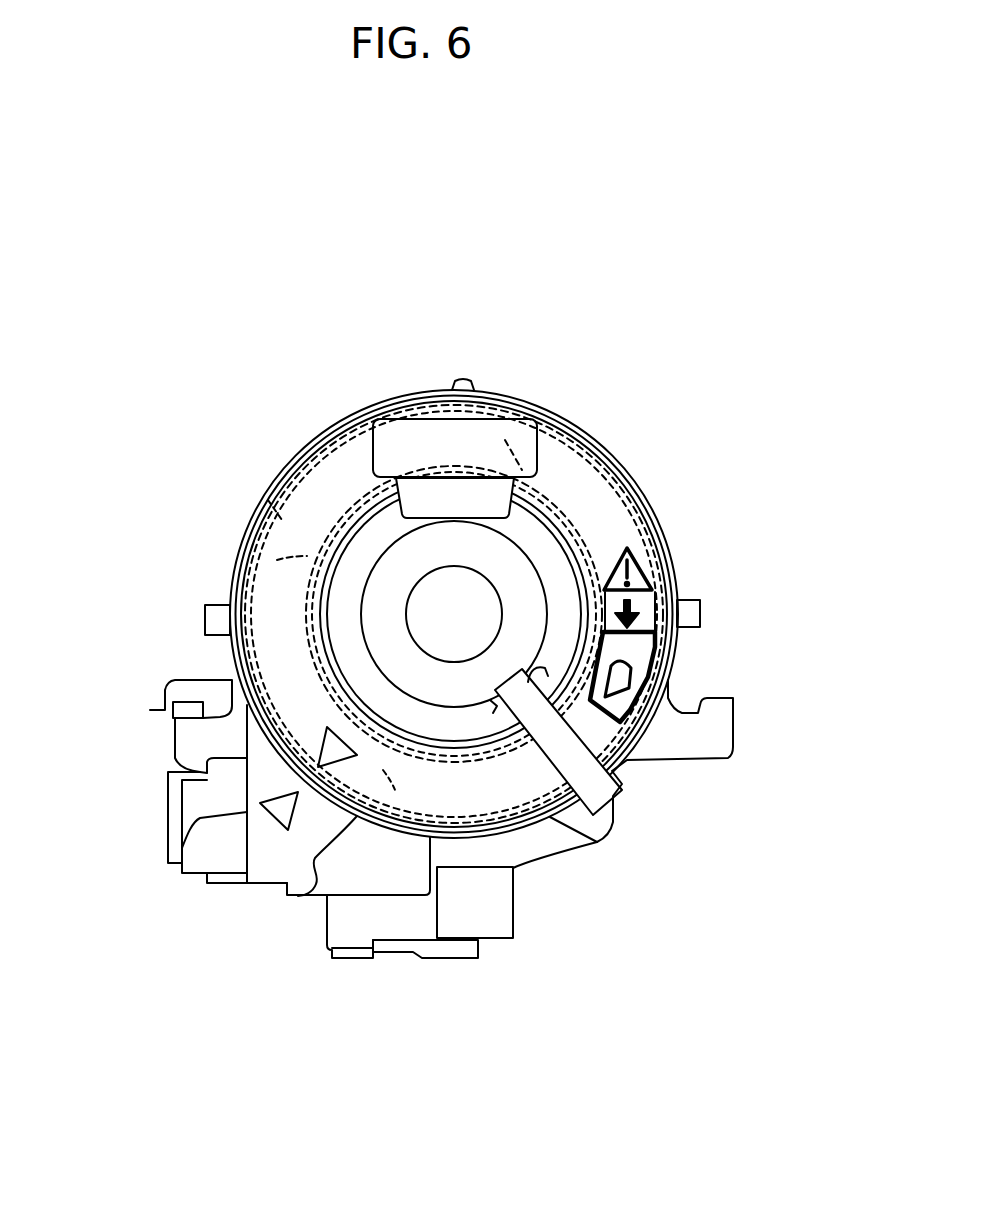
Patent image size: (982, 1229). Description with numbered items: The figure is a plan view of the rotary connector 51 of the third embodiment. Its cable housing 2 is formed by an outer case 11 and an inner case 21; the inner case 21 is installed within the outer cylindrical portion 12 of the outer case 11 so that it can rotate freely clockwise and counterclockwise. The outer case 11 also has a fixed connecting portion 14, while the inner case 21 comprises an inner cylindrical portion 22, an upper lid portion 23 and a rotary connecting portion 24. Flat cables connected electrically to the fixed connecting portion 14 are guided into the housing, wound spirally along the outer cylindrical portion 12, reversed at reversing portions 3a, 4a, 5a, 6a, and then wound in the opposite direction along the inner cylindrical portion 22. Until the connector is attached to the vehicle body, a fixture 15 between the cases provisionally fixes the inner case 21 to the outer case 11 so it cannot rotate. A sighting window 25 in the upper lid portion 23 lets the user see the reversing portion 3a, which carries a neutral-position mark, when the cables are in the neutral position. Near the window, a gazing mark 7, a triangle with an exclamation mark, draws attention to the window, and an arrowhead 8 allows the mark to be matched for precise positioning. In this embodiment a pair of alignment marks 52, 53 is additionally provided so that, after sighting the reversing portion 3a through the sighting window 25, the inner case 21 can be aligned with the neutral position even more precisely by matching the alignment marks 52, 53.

The rotary connector 51 is at (551, 360).
The cable housing 2 is at (597, 500).
The reversing portion 3a is at (665, 646).
The reversing portion 4a is at (395, 785).
The reversing portion 5a is at (297, 566).
The reversing portion 6a is at (503, 450).
The gazing mark 7 is at (645, 575).
The arrowhead 8 is at (637, 610).
The outer case 11 is at (520, 853).
The outer cylindrical portion 12 is at (597, 842).
The fixed connecting portion 14 is at (492, 915).
The fixture 15 is at (608, 792).
The inner case 21 is at (338, 593).
The inner cylindrical portion 22 is at (317, 620).
The upper lid portion 23 is at (277, 672).
The rotary connecting portion 24 is at (402, 450).
The sighting window 25 is at (675, 675).
The alignment mark 52 is at (182, 848).
The alignment mark 53 is at (182, 781).